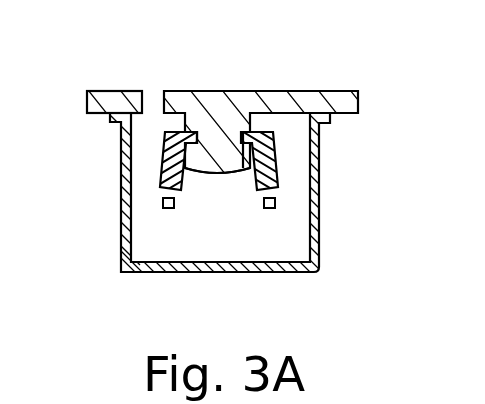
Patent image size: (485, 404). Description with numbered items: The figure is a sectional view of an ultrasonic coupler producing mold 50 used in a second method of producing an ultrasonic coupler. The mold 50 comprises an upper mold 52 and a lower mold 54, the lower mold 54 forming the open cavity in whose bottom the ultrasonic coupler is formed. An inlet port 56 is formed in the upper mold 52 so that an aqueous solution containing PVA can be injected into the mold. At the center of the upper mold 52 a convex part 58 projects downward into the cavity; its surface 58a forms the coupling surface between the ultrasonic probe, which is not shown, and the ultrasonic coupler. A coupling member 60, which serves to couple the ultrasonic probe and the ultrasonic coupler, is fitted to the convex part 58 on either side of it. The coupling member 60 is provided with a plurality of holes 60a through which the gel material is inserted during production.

The ultrasonic coupler producing mold 50 is at (315, 69).
The upper mold 52 is at (217, 99).
The lower mold 54 is at (320, 238).
The inlet port 56 is at (150, 91).
The convex part 58 is at (243, 177).
The surface 58a is at (212, 177).
The coupling member 60 is at (279, 182).
The holes 60a is at (159, 192).